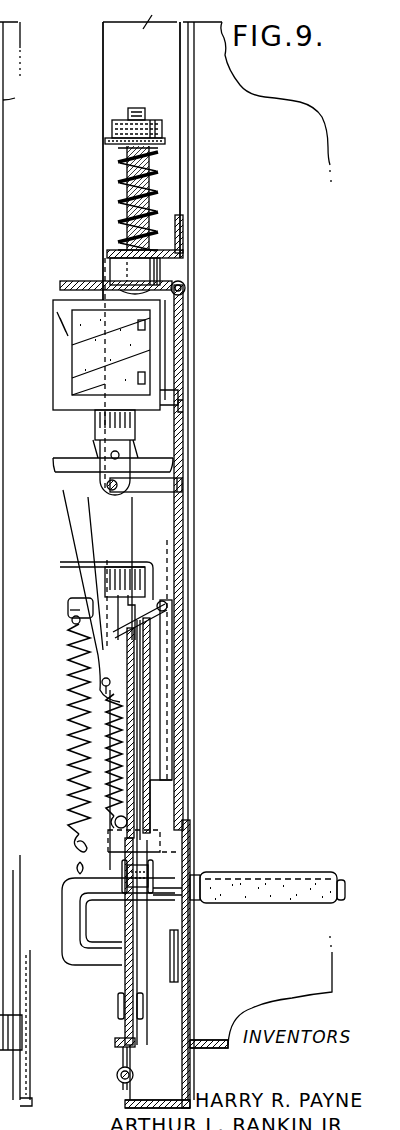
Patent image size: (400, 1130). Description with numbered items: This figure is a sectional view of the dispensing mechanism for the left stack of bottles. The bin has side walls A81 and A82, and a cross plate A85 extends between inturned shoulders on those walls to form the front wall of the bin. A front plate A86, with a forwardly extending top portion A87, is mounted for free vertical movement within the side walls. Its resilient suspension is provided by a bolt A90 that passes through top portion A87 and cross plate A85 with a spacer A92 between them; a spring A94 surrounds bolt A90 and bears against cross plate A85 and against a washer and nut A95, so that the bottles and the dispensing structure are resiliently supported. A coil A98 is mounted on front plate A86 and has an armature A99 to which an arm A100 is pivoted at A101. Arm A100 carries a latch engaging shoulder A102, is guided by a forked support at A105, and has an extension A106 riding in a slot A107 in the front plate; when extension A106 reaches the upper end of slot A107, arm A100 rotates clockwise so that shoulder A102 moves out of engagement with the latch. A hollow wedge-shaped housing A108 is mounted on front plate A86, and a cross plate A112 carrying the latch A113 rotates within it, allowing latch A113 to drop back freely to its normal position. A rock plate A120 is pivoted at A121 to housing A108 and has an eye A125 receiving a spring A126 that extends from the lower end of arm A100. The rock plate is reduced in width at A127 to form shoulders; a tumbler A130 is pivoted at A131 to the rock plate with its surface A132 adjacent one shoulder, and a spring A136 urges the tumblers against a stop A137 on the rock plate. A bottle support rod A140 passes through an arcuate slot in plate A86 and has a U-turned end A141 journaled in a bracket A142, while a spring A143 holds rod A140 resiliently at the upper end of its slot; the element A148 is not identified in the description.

The side wall A81 is at (115, 66).
The side wall A82 is at (29, 98).
The cross plate A85 is at (180, 236).
The front plate A86 is at (180, 516).
The forwardly extending top portion A87 is at (185, 285).
The bolt A90 is at (150, 150).
The spacer A92 is at (160, 265).
The spring A94 is at (150, 179).
The washer and nut A95 is at (160, 122).
The coil A98 is at (135, 350).
The armature A99 is at (110, 435).
The arm A100 is at (80, 530).
The pivot A101 is at (105, 486).
The latch engaging shoulder A102 is at (75, 650).
The guide A105 is at (117, 560).
The extension A106 is at (165, 462).
The slot A107 is at (177, 444).
The hollow wedge-shaped housing A108 is at (150, 795).
The cross plate A112 is at (165, 622).
The latch A113 is at (165, 600).
The rock plate A120 is at (130, 757).
The pivot A121 is at (90, 862).
The eye A125 is at (117, 822).
The spring A126 is at (110, 735).
The reduced width portion A127 is at (136, 914).
The tumbler A130 is at (125, 978).
The pivot A131 is at (118, 1005).
The surface A132 is at (137, 937).
The spring A136 is at (118, 1078).
The stop A137 is at (115, 1044).
The bottle support rod A140 is at (195, 880).
The U-turned end A141 is at (65, 907).
The bracket A142 is at (175, 937).
The spring A143 is at (72, 710).
The latch bracket A148 is at (105, 598).